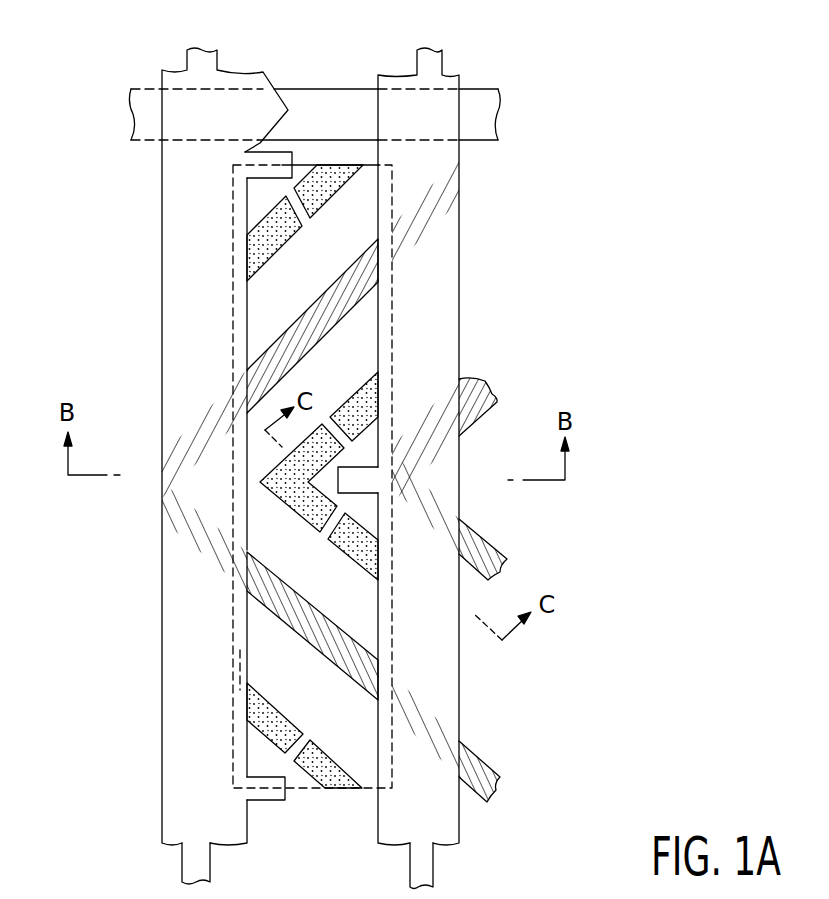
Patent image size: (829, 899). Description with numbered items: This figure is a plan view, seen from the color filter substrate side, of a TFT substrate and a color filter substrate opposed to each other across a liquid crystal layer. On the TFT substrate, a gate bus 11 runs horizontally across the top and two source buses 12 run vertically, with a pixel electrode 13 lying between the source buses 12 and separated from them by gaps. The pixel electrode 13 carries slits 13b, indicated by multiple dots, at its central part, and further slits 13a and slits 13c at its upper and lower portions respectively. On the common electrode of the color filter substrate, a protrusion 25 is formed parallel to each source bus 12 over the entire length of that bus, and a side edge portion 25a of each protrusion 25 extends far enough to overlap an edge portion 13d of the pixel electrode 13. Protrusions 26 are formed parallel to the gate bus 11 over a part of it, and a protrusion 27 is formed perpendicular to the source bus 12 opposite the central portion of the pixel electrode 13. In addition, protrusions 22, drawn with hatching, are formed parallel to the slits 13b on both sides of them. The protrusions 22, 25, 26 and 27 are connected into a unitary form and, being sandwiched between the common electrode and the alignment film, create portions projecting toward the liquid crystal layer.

The gate bus 11 is at (337, 110).
The source bus 12 is at (193, 860).
The pixel electrode 13 is at (311, 478).
The slits 13a is at (285, 208).
The slits 13b is at (347, 402).
The slits 13c is at (280, 747).
The edge portion of pixel electrode 13d is at (245, 690).
The protrusions 22 is at (312, 332).
The protrusion 25 is at (187, 273).
The side edge portion of protrusion 25a is at (240, 627).
The protrusion 26 is at (278, 157).
The protrusion 27 is at (352, 475).